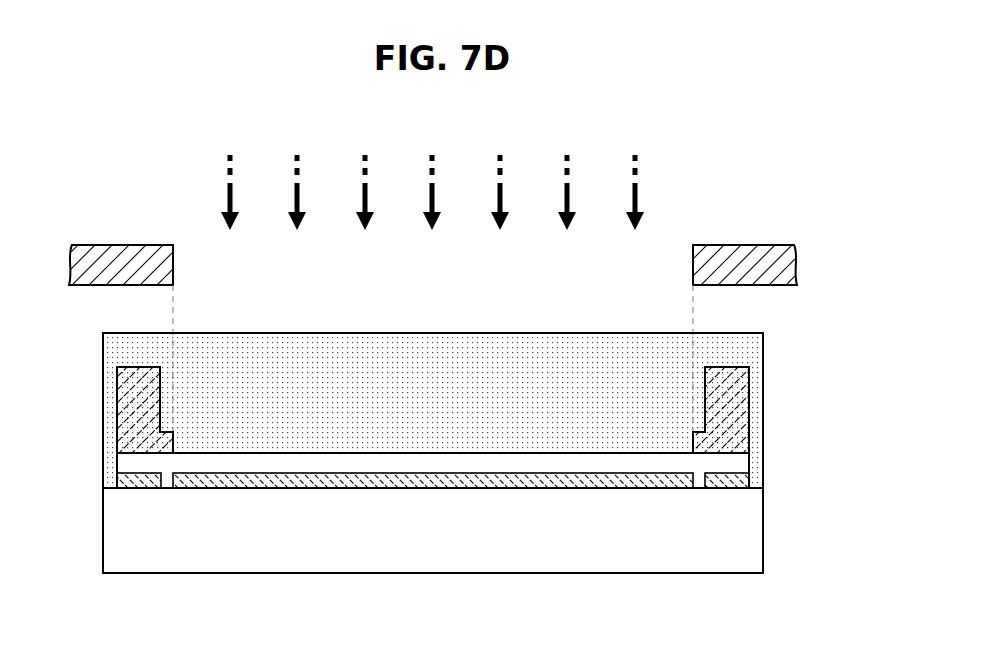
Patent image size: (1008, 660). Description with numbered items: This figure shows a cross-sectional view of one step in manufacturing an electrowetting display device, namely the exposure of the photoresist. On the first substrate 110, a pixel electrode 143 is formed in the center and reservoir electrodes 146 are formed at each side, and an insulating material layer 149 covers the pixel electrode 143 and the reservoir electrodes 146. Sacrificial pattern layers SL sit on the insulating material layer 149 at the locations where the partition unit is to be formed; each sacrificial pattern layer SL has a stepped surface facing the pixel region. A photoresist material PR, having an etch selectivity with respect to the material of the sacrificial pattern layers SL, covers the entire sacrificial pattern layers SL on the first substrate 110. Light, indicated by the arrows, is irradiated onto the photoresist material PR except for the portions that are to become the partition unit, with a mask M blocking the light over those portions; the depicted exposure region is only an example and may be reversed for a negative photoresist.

The mask M is at (788, 263).
The photoresist material PR is at (427, 348).
The sacrificial pattern layer SL is at (738, 410).
The insulating material layer 149 is at (289, 462).
The reservoir electrode 146 is at (140, 485).
The pixel electrode 143 is at (435, 485).
The first substrate 110 is at (750, 530).